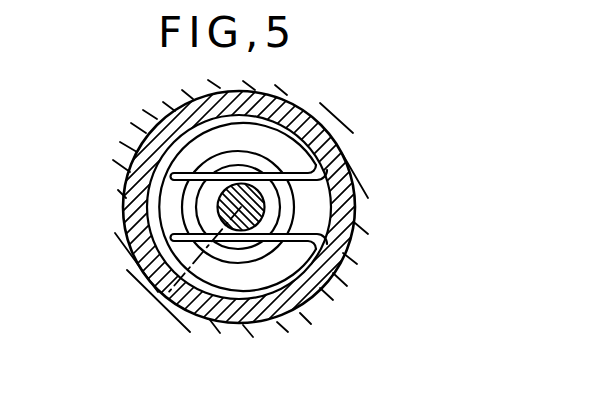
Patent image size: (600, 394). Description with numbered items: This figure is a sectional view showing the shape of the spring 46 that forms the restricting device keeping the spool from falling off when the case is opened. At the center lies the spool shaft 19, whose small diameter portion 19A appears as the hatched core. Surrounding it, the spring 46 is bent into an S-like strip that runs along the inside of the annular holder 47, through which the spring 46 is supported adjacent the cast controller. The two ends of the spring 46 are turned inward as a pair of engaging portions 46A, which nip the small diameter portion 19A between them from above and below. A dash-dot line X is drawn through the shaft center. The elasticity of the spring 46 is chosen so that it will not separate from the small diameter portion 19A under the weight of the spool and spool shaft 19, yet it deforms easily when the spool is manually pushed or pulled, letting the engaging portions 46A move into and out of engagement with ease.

The spool shaft 19 is at (217, 171).
The small diameter portion 19A is at (218, 207).
The spring 46 is at (330, 131).
The engaging portions 46A is at (310, 230).
The annular holder 47 is at (338, 268).
The axis line X is at (166, 292).